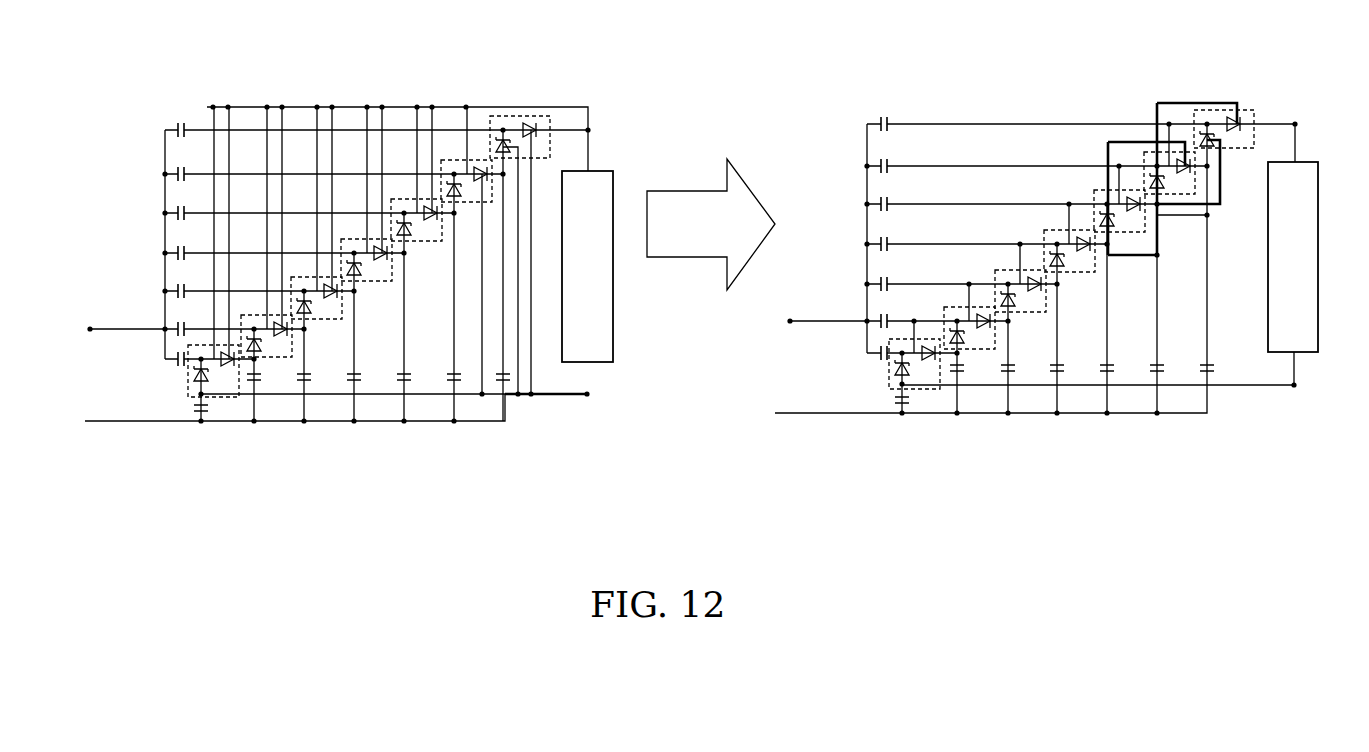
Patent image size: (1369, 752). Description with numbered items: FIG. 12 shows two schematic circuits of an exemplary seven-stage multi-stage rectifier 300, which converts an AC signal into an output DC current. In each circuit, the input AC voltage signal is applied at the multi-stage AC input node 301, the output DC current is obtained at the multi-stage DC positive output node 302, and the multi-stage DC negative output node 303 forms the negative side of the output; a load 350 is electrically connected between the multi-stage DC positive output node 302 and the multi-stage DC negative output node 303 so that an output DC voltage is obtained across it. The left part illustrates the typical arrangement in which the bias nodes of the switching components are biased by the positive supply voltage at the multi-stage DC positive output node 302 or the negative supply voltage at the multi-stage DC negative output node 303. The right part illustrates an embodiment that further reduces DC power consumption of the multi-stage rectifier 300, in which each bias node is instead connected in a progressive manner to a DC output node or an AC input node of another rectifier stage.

The multi-stage rectifier 300 is at (671, 240).
The multi-stage AC input node 301 is at (455, 315).
The multi-stage DC positive output node 302 is at (961, 127).
The multi-stage DC negative output node 303 is at (960, 394).
The load 350 is at (940, 262).